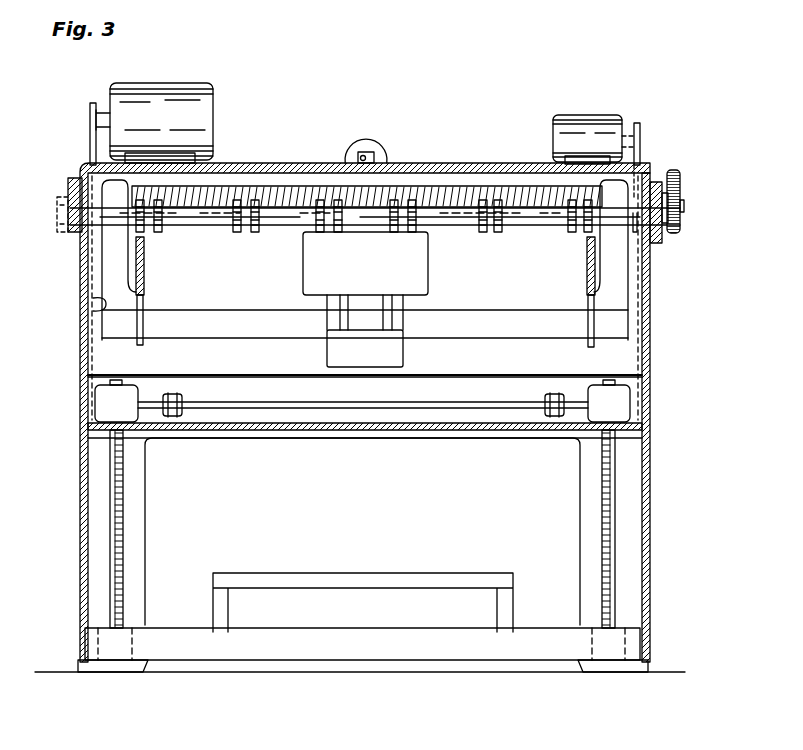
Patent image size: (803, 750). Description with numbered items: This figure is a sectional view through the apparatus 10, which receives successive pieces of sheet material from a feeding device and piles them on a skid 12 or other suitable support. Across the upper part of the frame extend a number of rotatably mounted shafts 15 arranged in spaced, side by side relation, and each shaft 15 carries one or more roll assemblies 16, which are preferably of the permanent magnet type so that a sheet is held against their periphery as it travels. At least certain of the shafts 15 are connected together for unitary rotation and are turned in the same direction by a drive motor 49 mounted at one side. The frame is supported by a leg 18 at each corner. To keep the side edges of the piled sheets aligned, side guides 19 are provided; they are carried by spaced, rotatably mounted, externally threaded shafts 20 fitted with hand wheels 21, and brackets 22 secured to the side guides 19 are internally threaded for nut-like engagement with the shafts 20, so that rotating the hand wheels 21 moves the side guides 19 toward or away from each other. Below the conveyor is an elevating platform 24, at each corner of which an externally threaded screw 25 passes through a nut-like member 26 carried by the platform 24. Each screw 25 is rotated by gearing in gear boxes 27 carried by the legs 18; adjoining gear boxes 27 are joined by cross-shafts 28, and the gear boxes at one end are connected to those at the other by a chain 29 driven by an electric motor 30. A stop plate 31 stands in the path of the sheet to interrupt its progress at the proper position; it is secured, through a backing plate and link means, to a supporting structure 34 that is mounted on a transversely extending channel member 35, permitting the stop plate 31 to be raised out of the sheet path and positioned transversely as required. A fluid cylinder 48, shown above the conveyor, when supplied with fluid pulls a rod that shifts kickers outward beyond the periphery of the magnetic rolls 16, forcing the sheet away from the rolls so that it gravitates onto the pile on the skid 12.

The apparatus 10 is at (282, 153).
The skid 12 is at (322, 582).
The shafts 15 is at (195, 218).
The roll assemblies 16 is at (284, 256).
The supporting leg 18 is at (82, 462).
The side guides 19 is at (146, 278).
The shafts 20 is at (468, 192).
The hand wheels 21 is at (677, 172).
The brackets 22 is at (118, 252).
The platform 24 is at (235, 650).
The screw 25 is at (112, 510).
The nut-like member 26 is at (115, 648).
The gear boxes 27 is at (126, 398).
The cross-shafts 28 is at (396, 410).
The chain 29 is at (100, 312).
The electric motor 30 is at (203, 92).
The stop plate 31 is at (414, 268).
The supporting structure 34 is at (416, 322).
The channel member 35 is at (222, 355).
The fluid cylinder 48 is at (372, 148).
The drive motor 49 is at (575, 125).